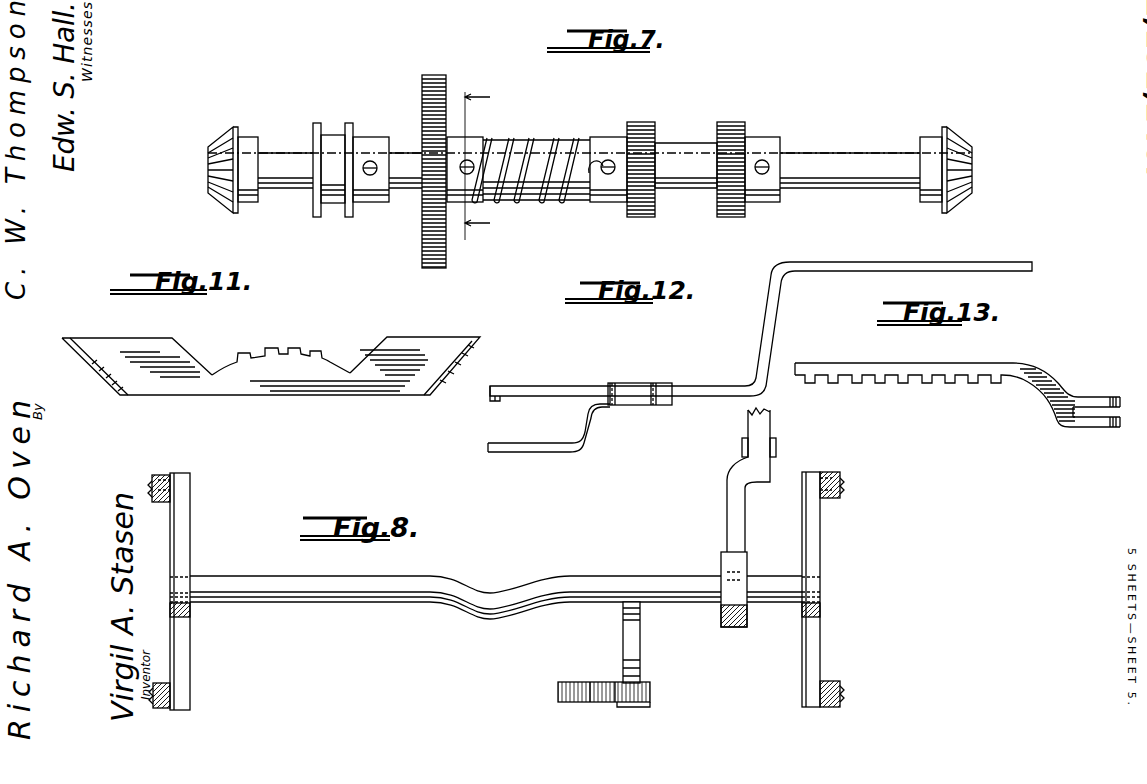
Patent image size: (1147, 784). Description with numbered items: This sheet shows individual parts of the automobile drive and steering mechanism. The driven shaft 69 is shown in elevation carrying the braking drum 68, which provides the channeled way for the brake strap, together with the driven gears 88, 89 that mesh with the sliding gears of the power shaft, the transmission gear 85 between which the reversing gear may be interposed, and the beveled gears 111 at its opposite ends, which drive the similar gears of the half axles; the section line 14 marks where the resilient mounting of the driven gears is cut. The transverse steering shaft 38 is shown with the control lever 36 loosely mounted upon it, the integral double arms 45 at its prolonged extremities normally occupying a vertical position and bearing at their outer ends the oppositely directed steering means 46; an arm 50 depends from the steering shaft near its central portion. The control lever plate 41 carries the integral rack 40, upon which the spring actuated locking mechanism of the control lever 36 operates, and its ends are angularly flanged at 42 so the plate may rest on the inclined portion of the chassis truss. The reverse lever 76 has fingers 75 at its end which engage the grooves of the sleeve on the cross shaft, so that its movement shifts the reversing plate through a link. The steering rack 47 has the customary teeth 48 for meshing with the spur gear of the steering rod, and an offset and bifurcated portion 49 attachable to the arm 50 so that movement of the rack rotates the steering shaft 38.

In FIG. 7, the section line 14 is at (493, 164).
In FIG. 8, the control lever 36 is at (748, 426).
In FIG. 8, the transverse steering shaft 38 is at (604, 580).
In FIG. 11, the rack 40 is at (289, 349).
In FIG. 11, the plate 41 is at (421, 347).
In FIG. 11, the angularly flanged ends 42 is at (61, 344).
In FIG. 8, the double arms 45 is at (180, 526).
In FIG. 8, the steering means 46 is at (165, 474).
In FIG. 13, the rack 47 is at (980, 365).
In FIG. 8, the rack 47 is at (567, 683).
In FIG. 13, the teeth 48 is at (924, 384).
In FIG. 13, the offset and bifurcated portion 49 is at (1105, 398).
In FIG. 8, the arm 50 is at (641, 648).
In FIG. 7, the braking drum 68 is at (332, 136).
In FIG. 7, the driven shaft 69 is at (276, 162).
In FIG. 12, the fingers 75 is at (502, 386).
In FIG. 12, the reverse lever 76 is at (685, 384).
In FIG. 7, the transmission gear 85 is at (738, 130).
In FIG. 7, the driven gear 88 is at (434, 92).
In FIG. 7, the driven gear 89 is at (650, 130).
In FIG. 7, the beveled gear 111 is at (228, 140).